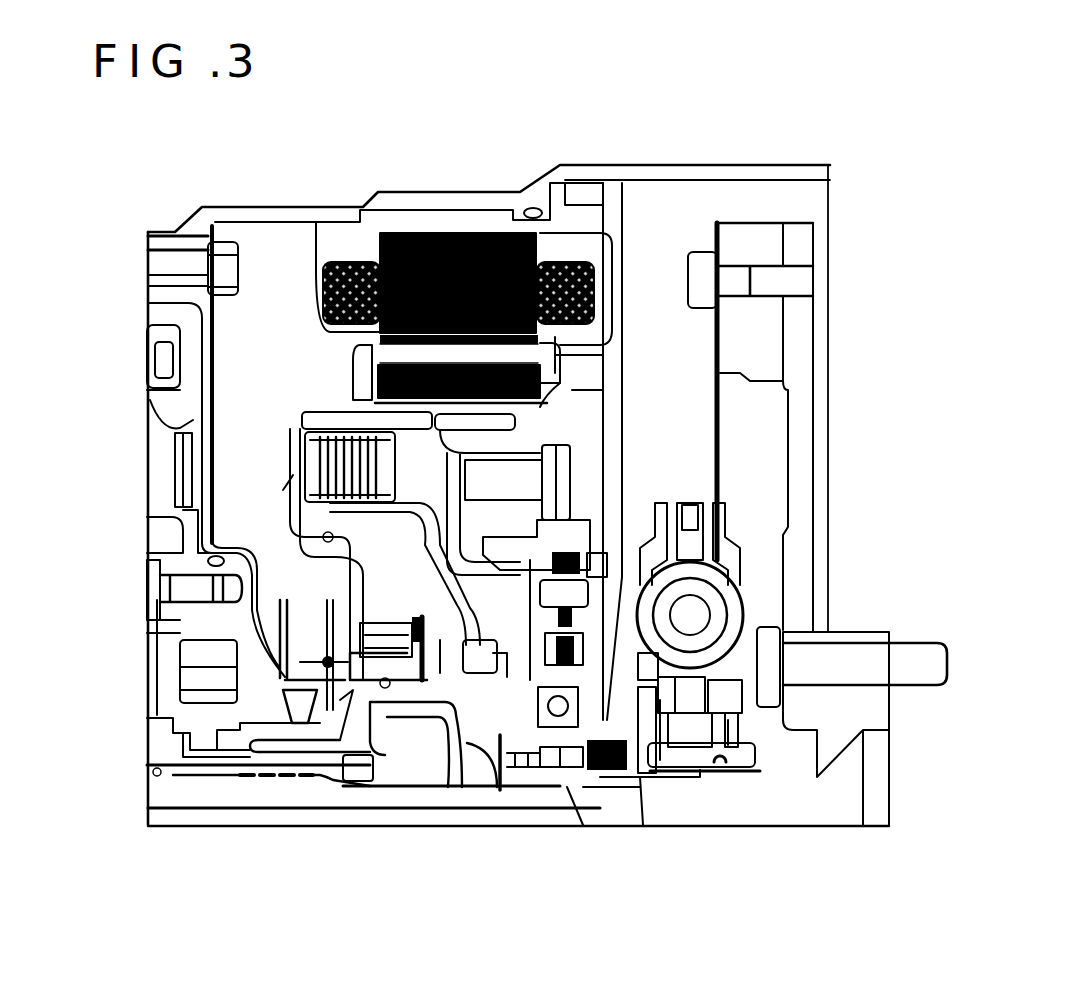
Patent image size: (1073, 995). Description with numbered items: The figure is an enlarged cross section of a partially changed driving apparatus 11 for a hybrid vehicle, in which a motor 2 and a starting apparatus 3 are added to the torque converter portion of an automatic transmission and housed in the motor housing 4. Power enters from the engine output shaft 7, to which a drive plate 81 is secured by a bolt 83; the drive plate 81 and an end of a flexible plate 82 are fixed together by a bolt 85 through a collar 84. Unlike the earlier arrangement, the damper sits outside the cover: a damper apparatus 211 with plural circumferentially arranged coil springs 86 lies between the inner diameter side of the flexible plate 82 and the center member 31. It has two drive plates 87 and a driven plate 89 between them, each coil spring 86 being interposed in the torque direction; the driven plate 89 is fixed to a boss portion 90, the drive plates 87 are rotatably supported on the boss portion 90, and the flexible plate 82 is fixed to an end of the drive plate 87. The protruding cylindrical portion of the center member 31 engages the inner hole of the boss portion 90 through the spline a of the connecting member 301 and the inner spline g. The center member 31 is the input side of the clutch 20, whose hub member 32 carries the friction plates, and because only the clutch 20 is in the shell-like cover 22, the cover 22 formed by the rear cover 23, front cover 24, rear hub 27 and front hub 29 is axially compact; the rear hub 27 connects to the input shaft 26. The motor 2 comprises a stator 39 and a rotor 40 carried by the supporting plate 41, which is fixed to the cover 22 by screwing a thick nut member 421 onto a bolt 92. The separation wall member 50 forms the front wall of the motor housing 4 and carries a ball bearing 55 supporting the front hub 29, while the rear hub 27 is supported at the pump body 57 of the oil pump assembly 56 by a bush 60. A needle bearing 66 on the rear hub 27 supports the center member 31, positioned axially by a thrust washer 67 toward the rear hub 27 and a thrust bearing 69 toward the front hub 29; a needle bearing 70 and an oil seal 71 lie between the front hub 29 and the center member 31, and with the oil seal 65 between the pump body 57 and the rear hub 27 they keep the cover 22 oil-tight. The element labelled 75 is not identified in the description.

The driving apparatus 11 is at (342, 170).
The motor 2 is at (418, 190).
The starting apparatus 3 is at (272, 432).
The motor housing 4 is at (520, 188).
The engine output shaft 7 is at (885, 628).
The clutch 20 is at (322, 433).
The damper apparatus 211 is at (752, 548).
The cover 22 is at (336, 413).
The rear cover 23 is at (284, 491).
The front cover 24 is at (517, 433).
The input shaft 26 is at (262, 805).
The rear hub 27 is at (393, 768).
The front hub 29 is at (512, 737).
The connecting member 301 is at (817, 445).
The center member 31 is at (605, 803).
The hub member 32 is at (413, 540).
The stator 39 is at (452, 232).
The rotor 40 is at (625, 342).
The supporting plate 41 is at (606, 389).
The nut member 421 is at (495, 520).
The separation wall member 50 is at (630, 205).
The ball bearing 55 is at (558, 727).
The oil pump assembly 56 is at (125, 370).
The pump body 57 is at (190, 605).
The bush 60 is at (262, 692).
The oil seal 65 is at (320, 700).
The needle bearing 66 is at (415, 712).
The thrust washer 67 is at (425, 695).
The thrust bearing 69 is at (460, 783).
The needle bearing 70 is at (538, 752).
The oil seal 71 is at (637, 777).
The resolver 75 is at (597, 553).
The drive plate 81 is at (797, 328).
The flexible plate 82 is at (717, 407).
The bolt 83 is at (930, 642).
The collar 84 is at (760, 224).
The bolt 85 is at (700, 255).
The coil springs 86 is at (740, 603).
The drive plates 87 is at (707, 500).
The driven plate 89 is at (722, 520).
The boss portion 90 is at (747, 758).
The bolt 92 is at (553, 478).
The inner spline g is at (700, 777).
The spline a is at (738, 777).